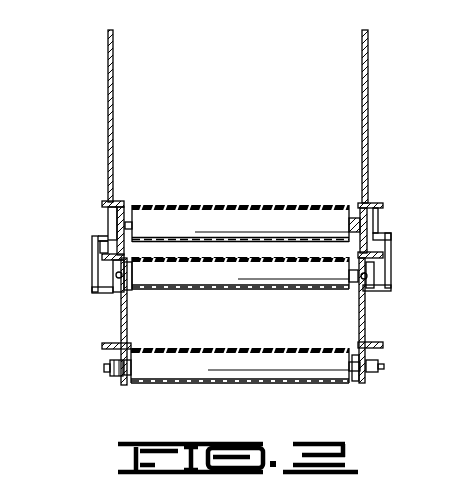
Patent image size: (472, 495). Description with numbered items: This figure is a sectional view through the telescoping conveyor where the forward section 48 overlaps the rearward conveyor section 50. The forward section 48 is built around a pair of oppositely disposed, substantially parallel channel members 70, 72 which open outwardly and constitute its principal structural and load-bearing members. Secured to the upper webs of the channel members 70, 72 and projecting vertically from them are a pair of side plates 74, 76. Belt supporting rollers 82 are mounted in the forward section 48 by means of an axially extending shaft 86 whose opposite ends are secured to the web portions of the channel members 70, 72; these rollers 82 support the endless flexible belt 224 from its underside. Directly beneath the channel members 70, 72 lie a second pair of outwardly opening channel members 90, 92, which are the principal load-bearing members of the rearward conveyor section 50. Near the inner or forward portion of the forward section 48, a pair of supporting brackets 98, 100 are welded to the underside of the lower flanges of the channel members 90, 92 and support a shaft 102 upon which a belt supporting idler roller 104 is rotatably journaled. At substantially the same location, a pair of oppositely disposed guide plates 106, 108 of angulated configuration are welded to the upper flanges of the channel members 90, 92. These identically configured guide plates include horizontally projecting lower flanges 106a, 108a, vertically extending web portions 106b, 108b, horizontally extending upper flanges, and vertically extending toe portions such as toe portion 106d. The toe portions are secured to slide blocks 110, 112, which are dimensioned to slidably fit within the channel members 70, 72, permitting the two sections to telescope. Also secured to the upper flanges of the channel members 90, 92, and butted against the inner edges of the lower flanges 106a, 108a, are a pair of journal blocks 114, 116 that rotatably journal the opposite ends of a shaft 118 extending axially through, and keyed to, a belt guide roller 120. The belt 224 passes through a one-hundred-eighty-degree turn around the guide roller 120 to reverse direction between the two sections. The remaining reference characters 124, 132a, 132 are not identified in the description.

The forward section 48 is at (80, 104).
The side plate 74 is at (108, 78).
The side plate 76 is at (368, 86).
The channel member 70 is at (120, 200).
The channel member 72 is at (358, 203).
The shaft 86 is at (131, 222).
The belt supporting roller 82 is at (240, 258).
The endless flexible belt 224 is at (236, 205).
The belt guide roller 120 is at (200, 282).
The shaft 118 is at (330, 296).
The belt supporting idler roller 104 is at (190, 373).
The channel member 90 is at (127, 329).
The channel member 92 is at (360, 318).
The slide block 112 is at (368, 225).
The guide plate 108 is at (416, 254).
The lower flange 108a is at (383, 290).
The web portion 108b is at (390, 240).
The journal block 116 is at (370, 280).
The guide plate 106 is at (68, 280).
The lower flange 106a is at (110, 295).
The web portion 106b is at (92, 265).
The toe portion 106d is at (108, 222).
The slide block 110 is at (113, 240).
The journal block 114 is at (116, 292).
The rearward conveyor section 50 is at (78, 382).
The supporting bracket 98 is at (117, 385).
The supporting bracket 100 is at (366, 378).
The shaft 102 is at (352, 372).
The support member 124 is at (455, 344).
The guide member 132a is at (450, 162).
The guide 132 is at (464, 60).